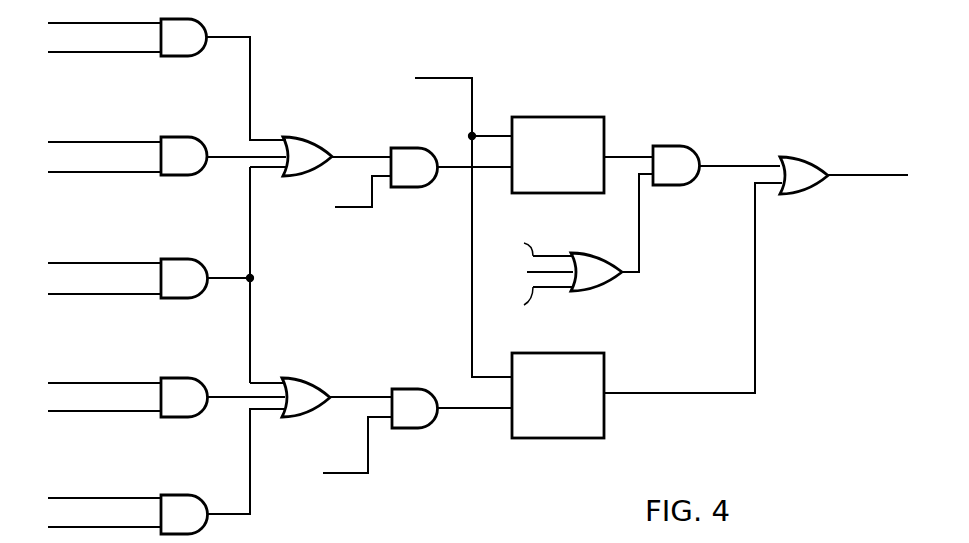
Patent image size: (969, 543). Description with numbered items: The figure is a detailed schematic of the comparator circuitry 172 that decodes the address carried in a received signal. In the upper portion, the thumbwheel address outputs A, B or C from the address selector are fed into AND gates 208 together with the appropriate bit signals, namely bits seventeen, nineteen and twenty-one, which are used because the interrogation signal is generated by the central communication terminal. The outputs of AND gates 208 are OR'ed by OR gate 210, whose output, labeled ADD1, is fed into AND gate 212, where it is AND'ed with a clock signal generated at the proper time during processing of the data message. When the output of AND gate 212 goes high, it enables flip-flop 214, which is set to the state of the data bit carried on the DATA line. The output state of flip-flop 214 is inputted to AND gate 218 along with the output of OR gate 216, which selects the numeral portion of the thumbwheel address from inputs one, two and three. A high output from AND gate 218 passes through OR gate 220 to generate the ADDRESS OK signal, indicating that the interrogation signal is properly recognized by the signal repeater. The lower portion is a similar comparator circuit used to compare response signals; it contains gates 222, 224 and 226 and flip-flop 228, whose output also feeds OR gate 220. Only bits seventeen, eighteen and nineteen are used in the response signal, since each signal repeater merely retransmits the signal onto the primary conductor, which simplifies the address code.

The comparator circuitry 172 is at (478, 267).
The AND gates 208 is at (195, 57).
The OR gate 210 is at (305, 137).
The AND gate 212 is at (418, 187).
The flip-flop 214 is at (590, 117).
The OR gate 216 is at (601, 291).
The AND gate 218 is at (670, 186).
The OR gate 220 is at (808, 194).
The gates 222 is at (194, 418).
The gate 224 is at (300, 418).
The gate 226 is at (404, 428).
The flip-flop 228 is at (605, 415).